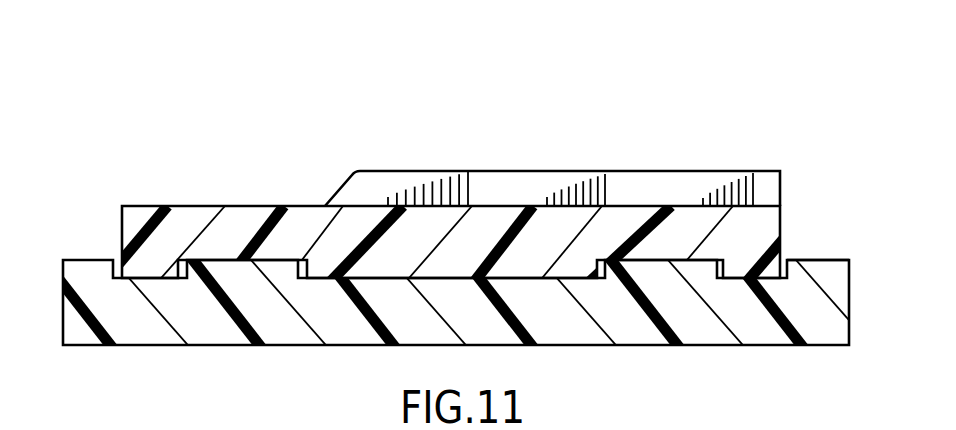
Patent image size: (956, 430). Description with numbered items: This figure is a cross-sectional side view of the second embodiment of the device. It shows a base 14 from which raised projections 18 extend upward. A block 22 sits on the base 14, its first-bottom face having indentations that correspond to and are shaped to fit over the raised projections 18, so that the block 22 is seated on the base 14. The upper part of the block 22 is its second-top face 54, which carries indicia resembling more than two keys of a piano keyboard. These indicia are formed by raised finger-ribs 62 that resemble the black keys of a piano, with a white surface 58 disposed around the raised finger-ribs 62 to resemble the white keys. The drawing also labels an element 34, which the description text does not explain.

The base 14 is at (143, 327).
The raised projection 18 is at (670, 268).
The block 22 is at (137, 211).
The top surface of base 34 is at (816, 262).
The second-top face 54 is at (339, 152).
The white surface 58 is at (192, 206).
The raised finger-ribs 62 is at (408, 180).